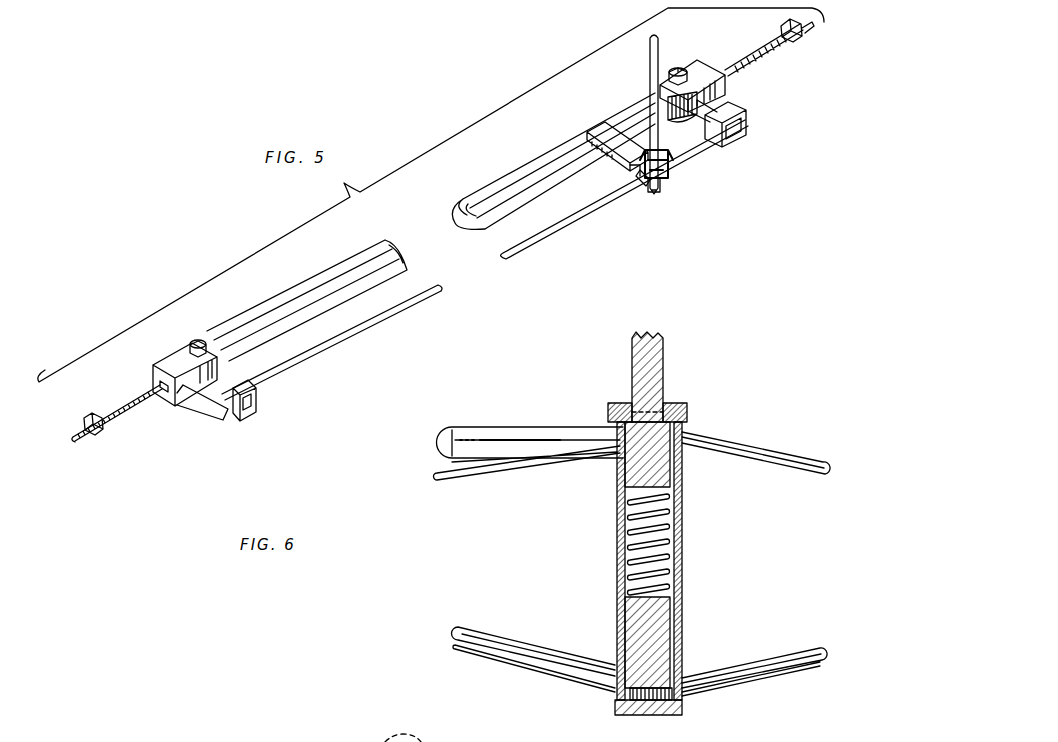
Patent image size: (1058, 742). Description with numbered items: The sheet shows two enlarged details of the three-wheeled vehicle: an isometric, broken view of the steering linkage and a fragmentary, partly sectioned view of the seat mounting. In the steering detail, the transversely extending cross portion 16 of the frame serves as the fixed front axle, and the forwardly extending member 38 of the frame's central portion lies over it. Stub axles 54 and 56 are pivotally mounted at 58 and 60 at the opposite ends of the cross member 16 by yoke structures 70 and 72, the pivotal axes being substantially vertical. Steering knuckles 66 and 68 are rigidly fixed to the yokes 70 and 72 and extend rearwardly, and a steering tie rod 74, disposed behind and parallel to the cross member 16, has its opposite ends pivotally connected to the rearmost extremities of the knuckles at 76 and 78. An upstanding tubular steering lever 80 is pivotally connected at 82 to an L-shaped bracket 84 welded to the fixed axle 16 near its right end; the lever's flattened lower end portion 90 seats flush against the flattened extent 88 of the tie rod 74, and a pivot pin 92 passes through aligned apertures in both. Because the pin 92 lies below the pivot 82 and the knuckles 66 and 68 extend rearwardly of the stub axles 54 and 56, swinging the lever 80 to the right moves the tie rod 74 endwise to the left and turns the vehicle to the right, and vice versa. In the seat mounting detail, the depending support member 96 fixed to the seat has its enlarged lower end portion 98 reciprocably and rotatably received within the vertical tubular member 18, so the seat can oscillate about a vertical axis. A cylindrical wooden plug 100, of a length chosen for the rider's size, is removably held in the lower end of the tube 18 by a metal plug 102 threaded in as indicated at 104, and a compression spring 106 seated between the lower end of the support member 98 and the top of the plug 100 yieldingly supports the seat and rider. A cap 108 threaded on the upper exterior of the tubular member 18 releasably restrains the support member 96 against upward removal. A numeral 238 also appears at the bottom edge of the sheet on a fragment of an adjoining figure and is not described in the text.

In FIG. 5, the cross portion 16 is at (342, 280).
In FIG. 6, the vertical tubular member 18 is at (675, 563).
In FIG. 6, the forwardly extending member 38 is at (530, 435).
In FIG. 5, the stub axle 54 is at (743, 62).
In FIG. 5, the stub axle 56 is at (158, 395).
In FIG. 5, the pivotal mounting 58 is at (677, 68).
In FIG. 5, the pivotal mounting 60 is at (199, 340).
In FIG. 5, the steering knuckle 66 is at (710, 137).
In FIG. 5, the steering knuckle 68 is at (212, 413).
In FIG. 5, the yoke structure 70 is at (703, 70).
In FIG. 5, the yoke structure 72 is at (173, 363).
In FIG. 5, the steering tie rod 74 is at (377, 327).
In FIG. 5, the pivotal connection 76 is at (733, 120).
In FIG. 5, the pivotal connection 78 is at (235, 420).
In FIG. 5, the steering lever 80 is at (653, 53).
In FIG. 5, the pivot 82 is at (658, 155).
In FIG. 5, the L-shaped bracket 84 is at (623, 147).
In FIG. 5, the flattened extent of tie rod 88 is at (648, 183).
In FIG. 5, the flattened lower end portion of steering lever 90 is at (640, 173).
In FIG. 5, the pivot pin 92 is at (655, 193).
In FIG. 6, the support member 96 is at (652, 363).
In FIG. 6, the lower end portion of support member 98 is at (658, 460).
In FIG. 6, the cylindrical wooden plug 100 is at (680, 630).
In FIG. 6, the metal plug 102 is at (630, 717).
In FIG. 6, the threaded connection 104 is at (623, 695).
In FIG. 6, the compression spring 106 is at (622, 547).
In FIG. 6, the cap 108 is at (670, 407).
In FIG. 6, the member 238 is at (290, 741).